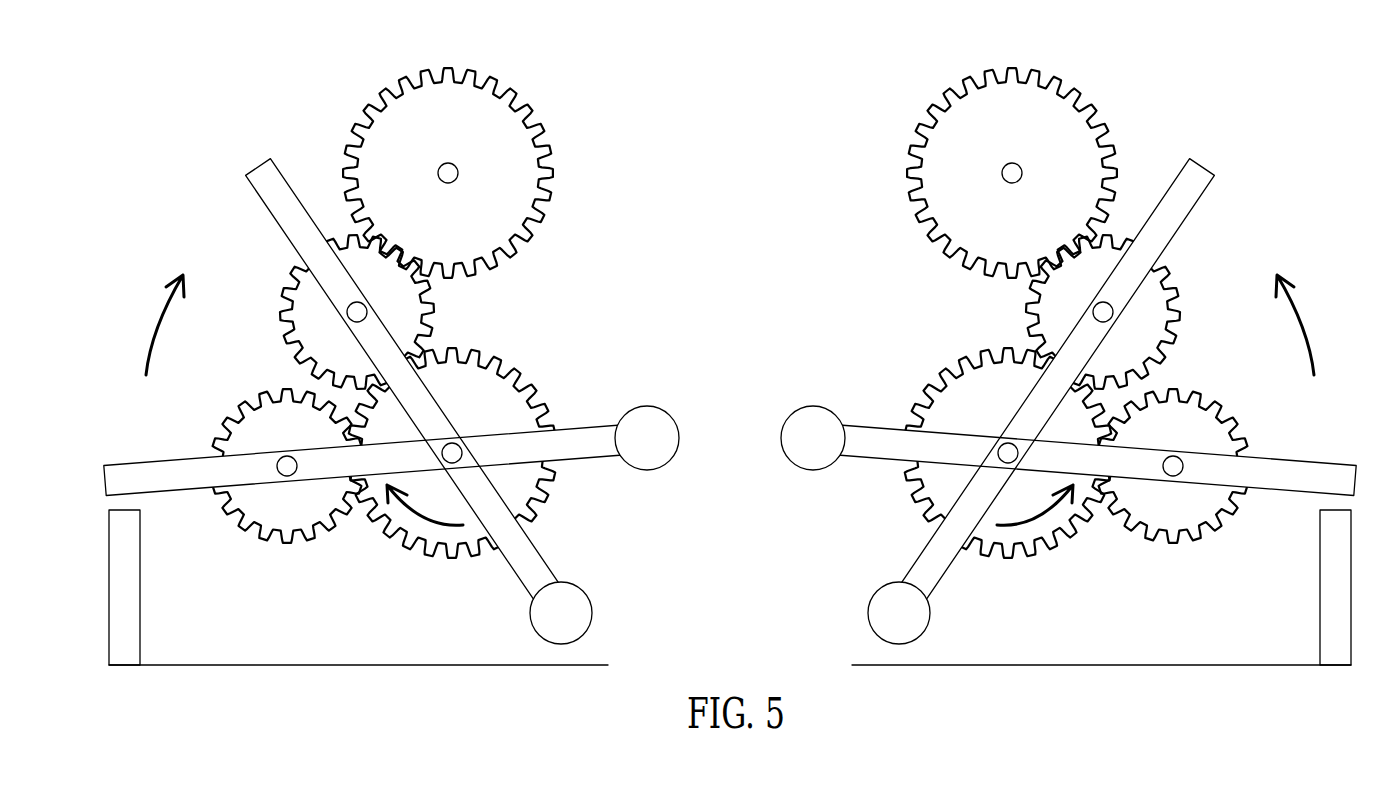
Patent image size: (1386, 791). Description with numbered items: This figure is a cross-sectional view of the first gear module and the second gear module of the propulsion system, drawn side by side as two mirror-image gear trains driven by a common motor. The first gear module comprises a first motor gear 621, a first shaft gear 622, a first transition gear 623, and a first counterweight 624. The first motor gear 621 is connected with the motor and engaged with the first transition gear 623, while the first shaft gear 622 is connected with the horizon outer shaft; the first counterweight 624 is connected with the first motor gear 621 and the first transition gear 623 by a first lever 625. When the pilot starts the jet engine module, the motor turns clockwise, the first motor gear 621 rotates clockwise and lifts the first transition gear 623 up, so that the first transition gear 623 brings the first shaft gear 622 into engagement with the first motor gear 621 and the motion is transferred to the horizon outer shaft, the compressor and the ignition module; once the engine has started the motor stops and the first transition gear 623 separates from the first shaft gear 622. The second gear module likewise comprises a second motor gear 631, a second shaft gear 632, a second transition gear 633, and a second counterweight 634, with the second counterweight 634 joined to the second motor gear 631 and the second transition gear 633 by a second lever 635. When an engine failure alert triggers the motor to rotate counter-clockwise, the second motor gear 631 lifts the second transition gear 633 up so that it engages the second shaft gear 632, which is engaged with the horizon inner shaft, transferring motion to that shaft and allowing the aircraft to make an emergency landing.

The first motor gear 621 is at (502, 375).
The first shaft gear 622 is at (520, 143).
The first transition gear 623 is at (313, 317).
The first counterweight 624 is at (642, 413).
The first lever 625 is at (148, 470).
The second motor gear 631 is at (982, 388).
The second shaft gear 632 is at (978, 108).
The second transition gear 633 is at (1150, 327).
The second counterweight 634 is at (807, 453).
The second lever 635 is at (1316, 468).